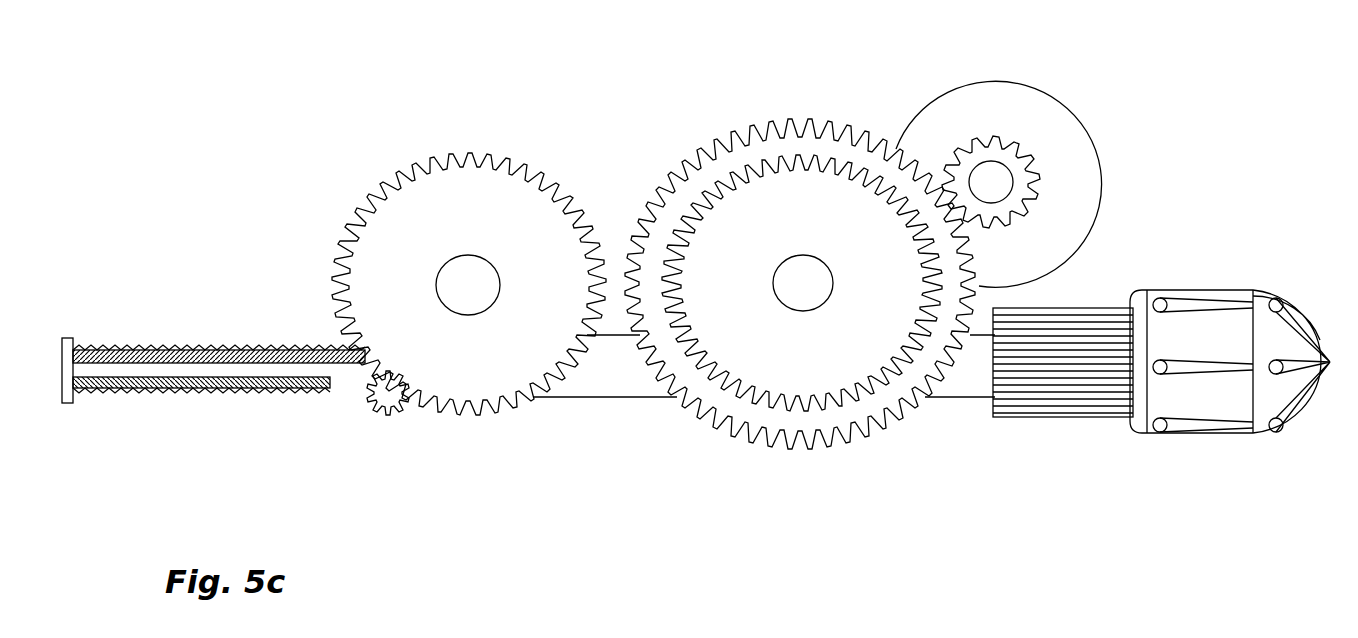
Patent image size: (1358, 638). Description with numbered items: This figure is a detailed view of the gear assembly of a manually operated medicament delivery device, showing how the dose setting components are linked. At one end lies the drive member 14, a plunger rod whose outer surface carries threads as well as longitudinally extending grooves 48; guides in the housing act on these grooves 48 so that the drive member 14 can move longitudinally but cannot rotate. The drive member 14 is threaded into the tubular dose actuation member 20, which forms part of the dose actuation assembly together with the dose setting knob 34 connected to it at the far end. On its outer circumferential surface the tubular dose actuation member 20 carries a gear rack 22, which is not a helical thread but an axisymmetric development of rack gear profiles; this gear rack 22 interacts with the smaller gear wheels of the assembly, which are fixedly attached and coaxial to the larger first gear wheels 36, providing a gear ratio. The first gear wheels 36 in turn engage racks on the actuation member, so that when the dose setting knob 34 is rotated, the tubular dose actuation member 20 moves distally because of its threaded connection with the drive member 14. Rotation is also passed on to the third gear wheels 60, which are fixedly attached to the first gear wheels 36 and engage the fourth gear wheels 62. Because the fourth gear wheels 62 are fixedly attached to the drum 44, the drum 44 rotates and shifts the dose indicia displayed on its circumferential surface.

The drive member 14 is at (150, 350).
The longitudinally extending grooves 48 is at (237, 372).
The gear rack 22 is at (385, 412).
The first gear wheels 36 is at (420, 182).
The third gear wheels 60 is at (692, 168).
The tubular dose actuation member 20 is at (627, 397).
The drum 44 is at (985, 125).
The fourth gear wheels 62 is at (1025, 183).
The dose setting knob 34 is at (1293, 322).